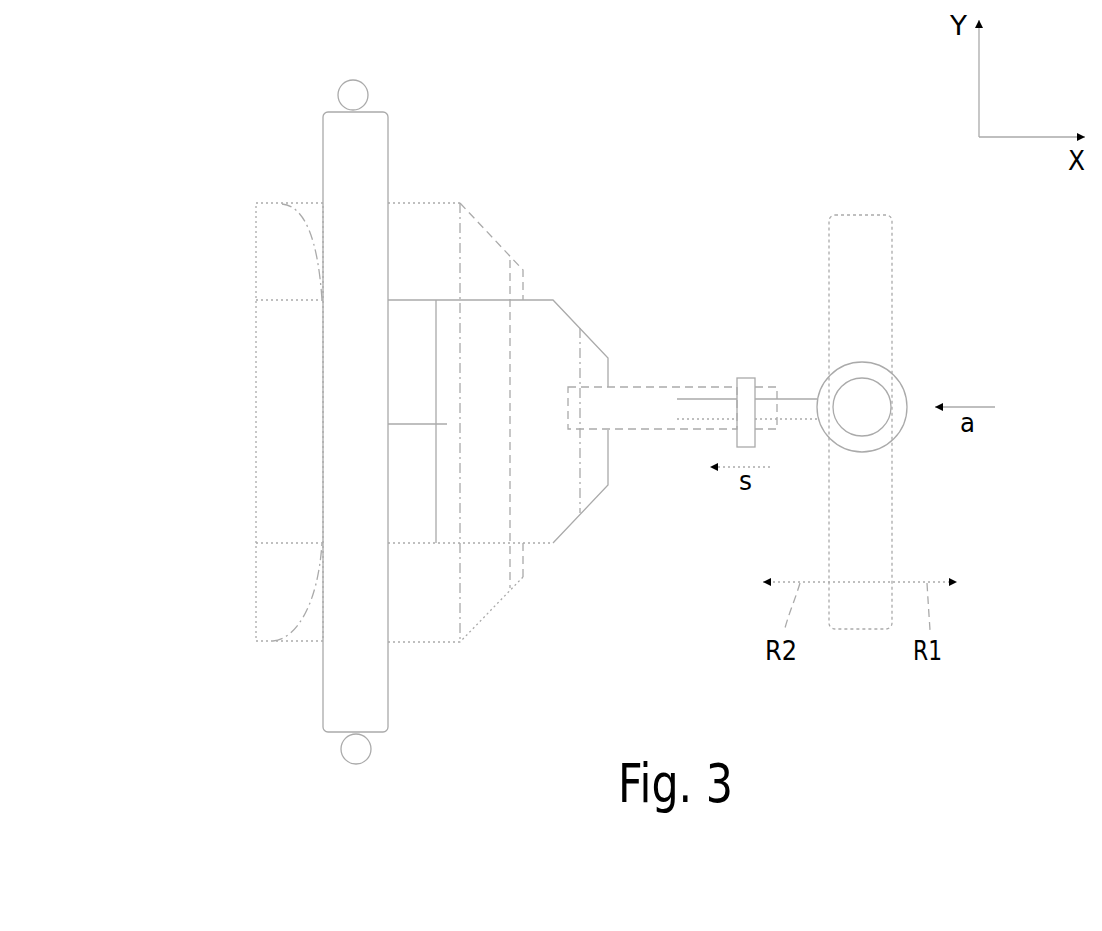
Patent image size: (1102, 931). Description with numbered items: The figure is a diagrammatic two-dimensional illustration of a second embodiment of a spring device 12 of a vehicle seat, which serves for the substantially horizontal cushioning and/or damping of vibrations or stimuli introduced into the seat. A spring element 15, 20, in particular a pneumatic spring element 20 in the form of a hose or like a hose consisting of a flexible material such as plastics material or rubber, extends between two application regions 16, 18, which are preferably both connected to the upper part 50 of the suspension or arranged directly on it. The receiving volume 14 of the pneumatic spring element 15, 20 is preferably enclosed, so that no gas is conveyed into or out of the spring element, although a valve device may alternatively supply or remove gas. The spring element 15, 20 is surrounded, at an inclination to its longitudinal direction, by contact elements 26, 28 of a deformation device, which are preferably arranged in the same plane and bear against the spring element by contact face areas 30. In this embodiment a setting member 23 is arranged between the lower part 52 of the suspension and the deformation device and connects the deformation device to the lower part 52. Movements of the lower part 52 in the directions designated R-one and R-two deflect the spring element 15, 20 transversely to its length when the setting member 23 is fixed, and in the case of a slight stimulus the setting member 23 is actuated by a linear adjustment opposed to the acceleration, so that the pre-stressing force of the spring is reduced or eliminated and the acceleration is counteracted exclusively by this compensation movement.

The spring device 12 is at (237, 453).
The receiving volume 14 is at (281, 410).
The spring element 15 is at (281, 410).
The pneumatic spring element 20 is at (347, 142).
The application region 16 is at (362, 95).
The application region 18 is at (360, 753).
The upper part of the suspension 50 is at (435, 427).
The setting member 23 is at (745, 310).
The contact element 26 is at (322, 350).
The contact element 28 is at (447, 243).
The contact face area 30 is at (322, 231).
The lower part of the suspension 52 is at (860, 272).